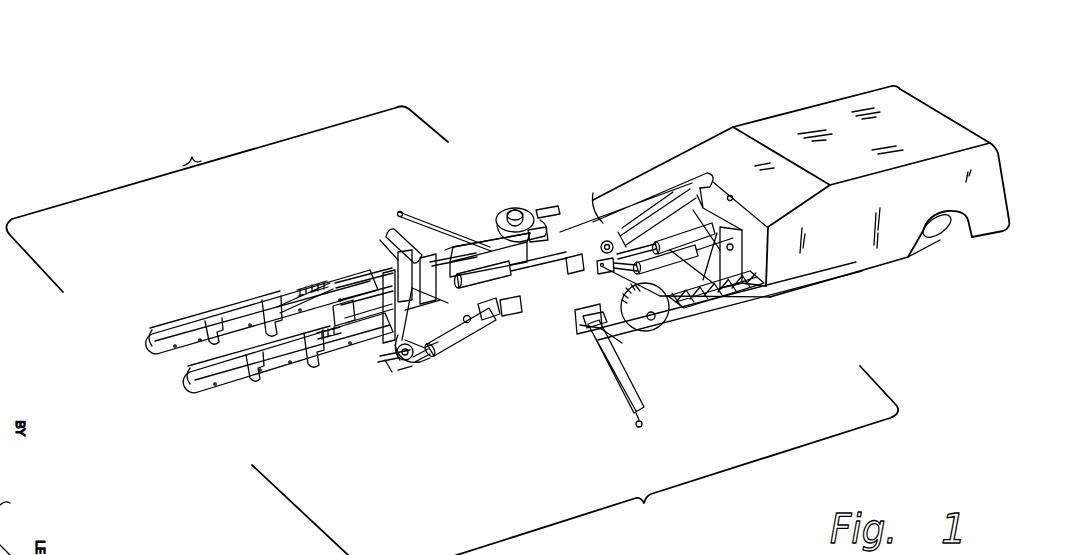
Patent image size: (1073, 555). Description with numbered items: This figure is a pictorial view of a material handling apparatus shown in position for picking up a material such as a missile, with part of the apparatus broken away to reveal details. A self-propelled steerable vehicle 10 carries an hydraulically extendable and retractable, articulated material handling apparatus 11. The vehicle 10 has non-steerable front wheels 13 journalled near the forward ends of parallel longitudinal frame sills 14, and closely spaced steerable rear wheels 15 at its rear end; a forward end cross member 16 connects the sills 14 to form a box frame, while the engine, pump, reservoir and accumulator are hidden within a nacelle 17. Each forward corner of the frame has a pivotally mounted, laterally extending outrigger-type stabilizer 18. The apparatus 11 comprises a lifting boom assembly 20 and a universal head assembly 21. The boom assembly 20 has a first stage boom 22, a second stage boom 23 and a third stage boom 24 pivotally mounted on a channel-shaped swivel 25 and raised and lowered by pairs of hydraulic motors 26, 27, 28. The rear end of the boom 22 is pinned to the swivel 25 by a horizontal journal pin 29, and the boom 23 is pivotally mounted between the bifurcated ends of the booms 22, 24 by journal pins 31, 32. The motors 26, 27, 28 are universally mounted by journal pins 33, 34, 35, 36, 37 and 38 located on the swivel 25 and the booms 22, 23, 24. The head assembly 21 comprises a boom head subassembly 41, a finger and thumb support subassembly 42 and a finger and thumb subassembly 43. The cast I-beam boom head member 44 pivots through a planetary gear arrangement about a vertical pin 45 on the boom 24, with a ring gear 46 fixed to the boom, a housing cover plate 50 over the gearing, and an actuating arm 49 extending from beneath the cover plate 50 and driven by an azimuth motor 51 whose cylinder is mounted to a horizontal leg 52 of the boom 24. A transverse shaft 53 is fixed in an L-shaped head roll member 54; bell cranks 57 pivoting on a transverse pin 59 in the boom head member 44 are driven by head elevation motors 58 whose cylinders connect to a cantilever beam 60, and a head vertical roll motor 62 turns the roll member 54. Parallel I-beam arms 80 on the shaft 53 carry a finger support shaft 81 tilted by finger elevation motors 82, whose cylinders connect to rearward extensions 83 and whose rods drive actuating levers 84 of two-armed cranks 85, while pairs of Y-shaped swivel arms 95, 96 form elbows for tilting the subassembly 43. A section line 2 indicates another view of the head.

The self-propelled steerable vehicle 10 is at (920, 91).
The material handling apparatus 11 is at (668, 460).
The front wheels 13 is at (561, 300).
The longitudinal frame sills 14 is at (683, 326).
The rear wheels 15 is at (950, 234).
The forward end cross member 16 is at (582, 328).
The nacelle 17 is at (998, 172).
The outrigger-type stabilizer 18 is at (631, 388).
The lifting boom assembly 20 is at (561, 194).
The universal head assembly 21 is at (227, 330).
The first stage boom 22 is at (732, 284).
The second stage boom 23 is at (594, 197).
The third stage boom 24 is at (667, 180).
The boom supporting turntable or swivel 25 is at (739, 263).
The hydraulic motors 26 is at (703, 305).
The hydraulic motors 27 is at (740, 205).
The hydraulic motors 28 is at (693, 163).
The horizontal journal pin 29 is at (734, 249).
The horizontal journal pin 31 is at (599, 267).
The horizontal journal pin 32 is at (733, 197).
The journal pin 33 is at (742, 297).
The journal pin 34 is at (617, 273).
The journal pin 35 is at (731, 222).
The journal pin 36 is at (597, 236).
The journal pin 37 is at (708, 174).
The journal pin 38 is at (668, 250).
The boom head subassembly 41 is at (484, 235).
The finger and thumb support subassembly 42 is at (425, 364).
The finger and thumb subassembly 43 is at (236, 301).
The boom head member 44 is at (490, 255).
The vertical pin 45 is at (505, 203).
The ring gear 46 is at (495, 220).
The actuating arm 49 is at (533, 229).
The hub 50 is at (534, 206).
The boom head azimuth motor 51 is at (551, 197).
The horizontal leg 52 is at (614, 212).
The transverse shaft 53 is at (516, 319).
The head roll member 54 is at (391, 296).
The bell cranks 57 is at (447, 263).
The head elevation motor 58 is at (508, 293).
The transverse journal pin 59 is at (573, 272).
The cantilever beam 60 is at (545, 285).
The head vertical roll motor 62 is at (397, 232).
The I-beam arms 80 is at (381, 240).
The finger support shaft 81 is at (433, 362).
The finger elevation motors 82 is at (452, 336).
The rearward extension 83 is at (490, 311).
The actuating lever 84 is at (403, 388).
The two-armed crank 85 is at (388, 386).
The Y-shaped swivel arms 95 is at (386, 362).
The Y-shaped swivel arms 96 is at (380, 354).
The section line 2 is at (368, 257).